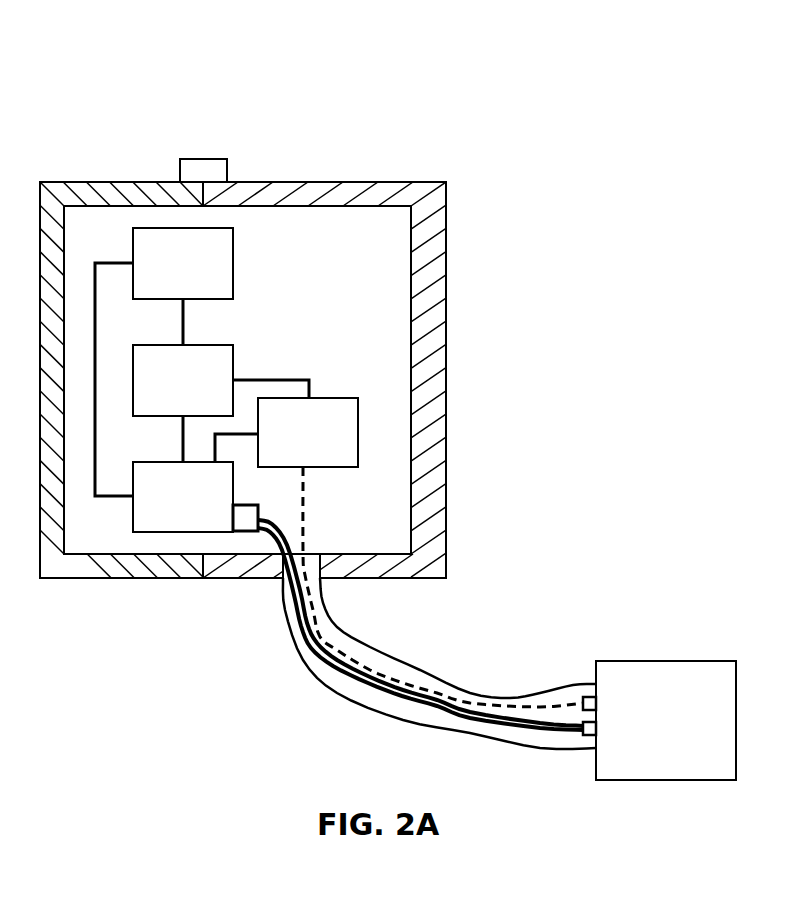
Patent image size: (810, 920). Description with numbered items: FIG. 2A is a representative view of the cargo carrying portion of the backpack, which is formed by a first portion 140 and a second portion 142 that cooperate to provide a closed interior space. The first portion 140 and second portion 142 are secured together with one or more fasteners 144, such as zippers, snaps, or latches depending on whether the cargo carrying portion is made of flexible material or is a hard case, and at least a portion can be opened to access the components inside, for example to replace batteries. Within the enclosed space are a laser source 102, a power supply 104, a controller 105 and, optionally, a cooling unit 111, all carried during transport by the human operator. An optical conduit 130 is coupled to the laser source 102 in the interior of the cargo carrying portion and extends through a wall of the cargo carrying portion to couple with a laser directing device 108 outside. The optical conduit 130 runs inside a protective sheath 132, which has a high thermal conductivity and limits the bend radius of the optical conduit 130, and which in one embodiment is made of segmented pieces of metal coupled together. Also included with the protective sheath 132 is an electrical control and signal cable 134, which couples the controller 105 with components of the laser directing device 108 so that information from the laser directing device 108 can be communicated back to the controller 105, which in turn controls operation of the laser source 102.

The laser source 102 is at (195, 497).
The power supply 104 is at (183, 380).
The controller 105 is at (308, 432).
The laser directing device 108 is at (659, 720).
The cooling unit 111 is at (183, 263).
The optical conduit 130 is at (519, 738).
The protective sheath 132 is at (473, 675).
The electrical control and signal cable 134 is at (374, 661).
The first portion 140 is at (89, 593).
The second portion 142 is at (380, 337).
The fastener 144 is at (190, 152).